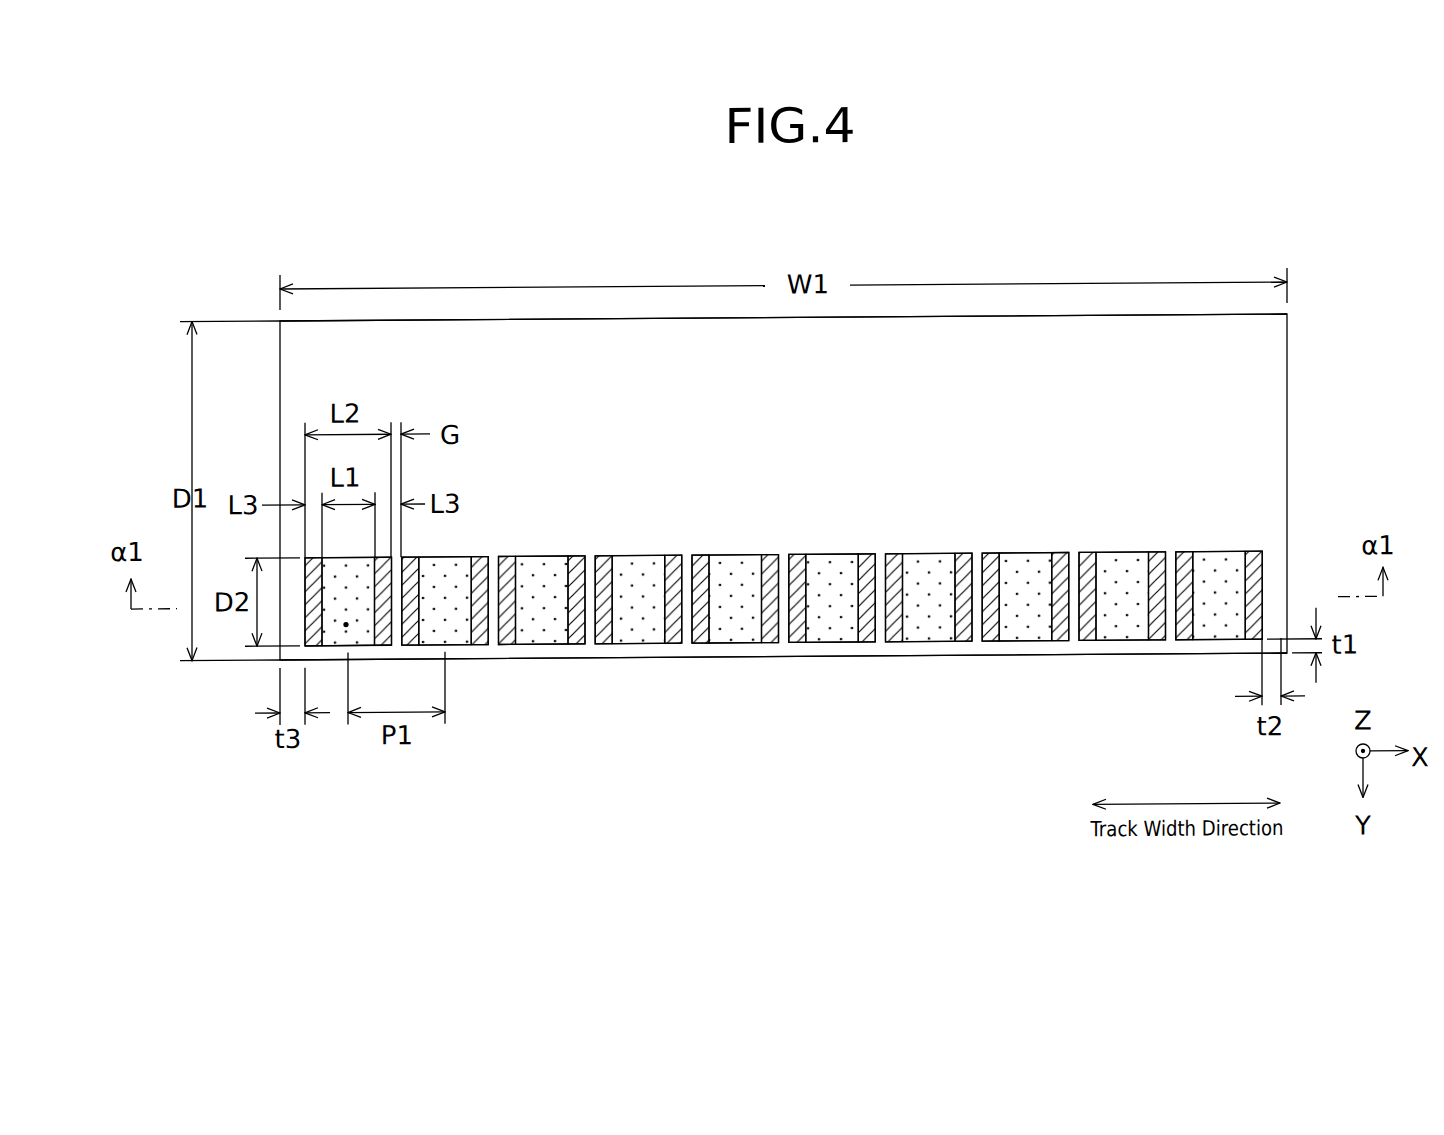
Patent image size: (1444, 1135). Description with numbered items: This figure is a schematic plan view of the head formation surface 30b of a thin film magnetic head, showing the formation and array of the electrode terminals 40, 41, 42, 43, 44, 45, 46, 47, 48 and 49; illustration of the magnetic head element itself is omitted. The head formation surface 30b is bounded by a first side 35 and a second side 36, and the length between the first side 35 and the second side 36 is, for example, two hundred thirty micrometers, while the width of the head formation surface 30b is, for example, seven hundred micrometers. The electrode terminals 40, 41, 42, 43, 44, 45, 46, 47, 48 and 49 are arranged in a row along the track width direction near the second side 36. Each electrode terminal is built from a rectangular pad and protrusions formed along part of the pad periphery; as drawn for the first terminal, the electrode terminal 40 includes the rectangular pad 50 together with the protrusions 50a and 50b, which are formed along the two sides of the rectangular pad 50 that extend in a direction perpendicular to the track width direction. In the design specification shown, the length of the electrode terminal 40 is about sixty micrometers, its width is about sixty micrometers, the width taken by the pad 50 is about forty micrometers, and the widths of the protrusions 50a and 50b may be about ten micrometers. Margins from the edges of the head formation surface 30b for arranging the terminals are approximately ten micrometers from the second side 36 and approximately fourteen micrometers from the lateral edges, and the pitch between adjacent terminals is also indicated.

The head formation surface 30b is at (1252, 414).
The first side 35 is at (643, 321).
The second side 36 is at (866, 661).
The electrode terminal 40 is at (343, 636).
The electrode terminal 41 is at (461, 652).
The electrode terminal 42 is at (549, 652).
The electrode terminal 43 is at (645, 652).
The electrode terminal 44 is at (731, 652).
The electrode terminal 45 is at (833, 652).
The electrode terminal 46 is at (928, 652).
The electrode terminal 47 is at (1025, 652).
The electrode terminal 48 is at (1117, 652).
The electrode terminal 49 is at (1210, 652).
The rectangular pad 50 is at (346, 628).
The protrusion 50a is at (305, 646).
The protrusion 50b is at (383, 581).